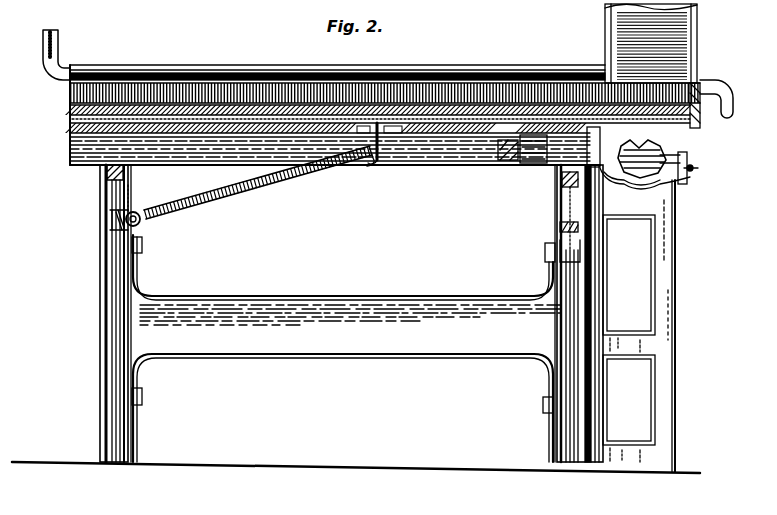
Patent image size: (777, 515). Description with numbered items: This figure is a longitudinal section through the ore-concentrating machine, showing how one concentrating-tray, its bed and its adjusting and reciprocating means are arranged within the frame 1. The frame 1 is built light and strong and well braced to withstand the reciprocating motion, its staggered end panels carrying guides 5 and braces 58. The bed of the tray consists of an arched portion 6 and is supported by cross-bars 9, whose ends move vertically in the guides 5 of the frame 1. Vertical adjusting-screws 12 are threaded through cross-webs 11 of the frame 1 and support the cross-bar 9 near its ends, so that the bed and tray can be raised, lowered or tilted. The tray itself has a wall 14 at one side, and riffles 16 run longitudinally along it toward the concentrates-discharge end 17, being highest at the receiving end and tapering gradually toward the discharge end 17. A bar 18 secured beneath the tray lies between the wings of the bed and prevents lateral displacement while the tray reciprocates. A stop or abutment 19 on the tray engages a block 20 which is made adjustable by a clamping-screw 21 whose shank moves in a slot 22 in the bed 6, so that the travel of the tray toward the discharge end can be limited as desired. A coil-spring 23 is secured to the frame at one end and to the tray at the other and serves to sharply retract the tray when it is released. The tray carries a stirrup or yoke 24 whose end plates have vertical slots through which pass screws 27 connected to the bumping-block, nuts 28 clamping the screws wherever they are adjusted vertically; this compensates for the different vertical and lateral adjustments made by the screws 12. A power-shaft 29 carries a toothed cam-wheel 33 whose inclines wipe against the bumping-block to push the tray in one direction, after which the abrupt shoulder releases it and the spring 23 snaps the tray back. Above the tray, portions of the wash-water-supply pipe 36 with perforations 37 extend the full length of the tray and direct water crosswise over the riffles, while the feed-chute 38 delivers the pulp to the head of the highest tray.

The frame 1 is at (120, 381).
The guides 5 is at (120, 337).
The arched portion 6 is at (448, 162).
The cross-bars 9 is at (108, 178).
The cross-webs 11 is at (108, 218).
The adjusting-screws 12 is at (130, 200).
The wall 14 is at (70, 95).
The riffles 16 is at (700, 112).
The concentrates-discharge end 17 is at (70, 108).
The bar 18 is at (70, 123).
The stop or abutment 19 is at (562, 178).
The block 20 is at (518, 150).
The clamping-screw 21 is at (520, 165).
The slot 22 is at (477, 168).
The coil-spring 23 is at (272, 205).
The stirrups or yokes 24 is at (678, 186).
The screws 27 is at (698, 169).
The nuts 28 is at (688, 165).
The power-shaft 29 is at (645, 152).
The toothed cam-wheel 33 is at (668, 160).
The wash-water-supply pipe portions 36 is at (462, 71).
The perforations 37 is at (183, 73).
The feed-chute 38 is at (605, 37).
The braces 58 is at (346, 348).